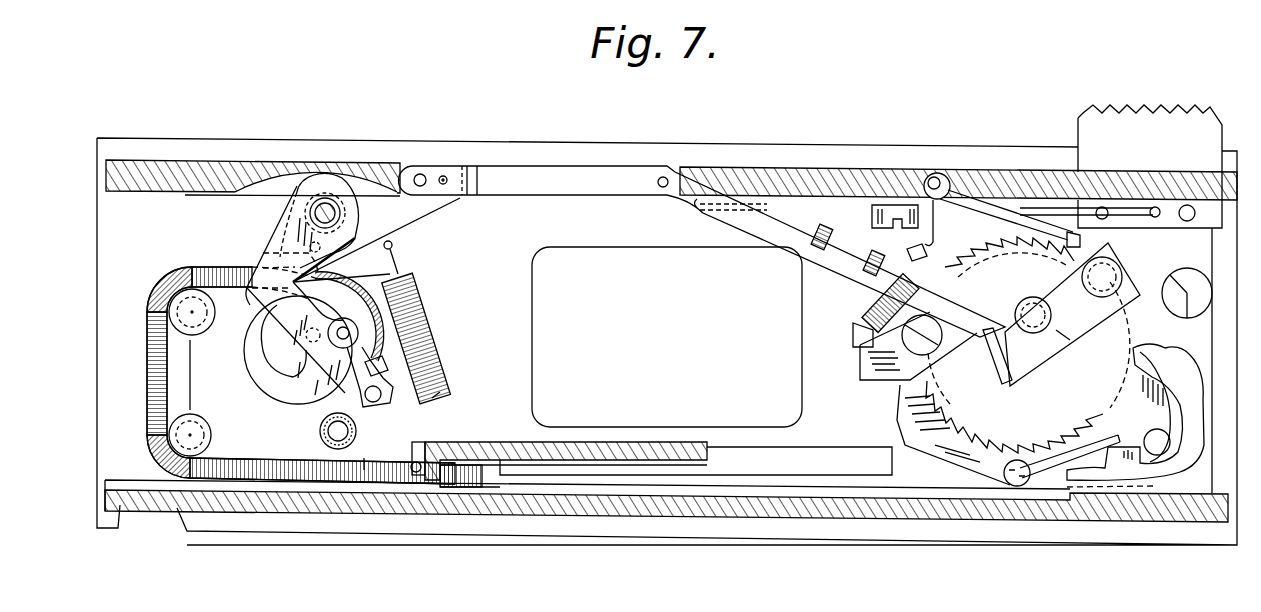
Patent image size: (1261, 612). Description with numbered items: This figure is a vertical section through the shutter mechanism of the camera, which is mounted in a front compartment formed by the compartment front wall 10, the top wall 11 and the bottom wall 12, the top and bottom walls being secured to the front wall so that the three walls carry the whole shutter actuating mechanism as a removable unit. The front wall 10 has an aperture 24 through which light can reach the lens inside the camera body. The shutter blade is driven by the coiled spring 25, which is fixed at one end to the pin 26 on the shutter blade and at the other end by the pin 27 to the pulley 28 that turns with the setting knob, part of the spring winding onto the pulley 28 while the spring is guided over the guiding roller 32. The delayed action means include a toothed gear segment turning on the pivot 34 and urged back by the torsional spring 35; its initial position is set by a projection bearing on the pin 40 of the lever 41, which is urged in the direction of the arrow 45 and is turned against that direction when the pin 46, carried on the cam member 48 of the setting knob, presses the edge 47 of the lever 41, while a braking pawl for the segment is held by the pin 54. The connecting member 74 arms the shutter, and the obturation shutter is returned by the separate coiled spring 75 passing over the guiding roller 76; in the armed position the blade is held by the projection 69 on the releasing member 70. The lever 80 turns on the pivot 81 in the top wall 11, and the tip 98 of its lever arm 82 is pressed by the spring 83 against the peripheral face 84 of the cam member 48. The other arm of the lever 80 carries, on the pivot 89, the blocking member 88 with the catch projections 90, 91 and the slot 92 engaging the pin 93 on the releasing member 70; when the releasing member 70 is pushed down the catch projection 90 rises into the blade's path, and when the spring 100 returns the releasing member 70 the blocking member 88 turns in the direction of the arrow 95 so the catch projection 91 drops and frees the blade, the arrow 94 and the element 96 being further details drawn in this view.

The compartment front wall 10 is at (103, 200).
The top wall 11 is at (141, 162).
The bottom wall 12 is at (222, 513).
The aperture 24 is at (575, 262).
The coiled spring 25 is at (213, 268).
The pin 26 is at (1015, 486).
The pin 27 is at (440, 392).
The pulley 28 is at (275, 388).
The guiding roller 32 is at (200, 322).
The pivot 34 is at (338, 437).
The torsional spring 35 is at (364, 462).
The pin 40 is at (373, 403).
The lever 41 is at (292, 215).
The arrow 45 is at (342, 184).
The pin 46 is at (360, 334).
The edge 47 is at (388, 360).
The cam member 48 is at (272, 347).
The pin 54 is at (327, 201).
The projection 69 is at (1174, 306).
The releasing member 70 is at (1202, 127).
The connecting member 74 is at (503, 443).
The coiled spring 75 is at (193, 377).
The guiding roller 76 is at (198, 436).
The lever 80 is at (503, 188).
The pivot 81 is at (668, 178).
The lever arm 82 is at (421, 221).
The spring 83 is at (430, 292).
The peripheral face 84 is at (267, 362).
The blocking member 88 is at (1027, 395).
The pivot 89 is at (1040, 373).
The catch projection 90 is at (993, 379).
The catch projection 91 is at (937, 353).
The slot 92 is at (1062, 332).
The pin 93 is at (1112, 277).
The direction of movement 94 is at (630, 184).
The arrow 95 is at (1057, 300).
The roller 96 is at (1013, 333).
The tip 98 is at (307, 259).
The spring 100 is at (1133, 228).